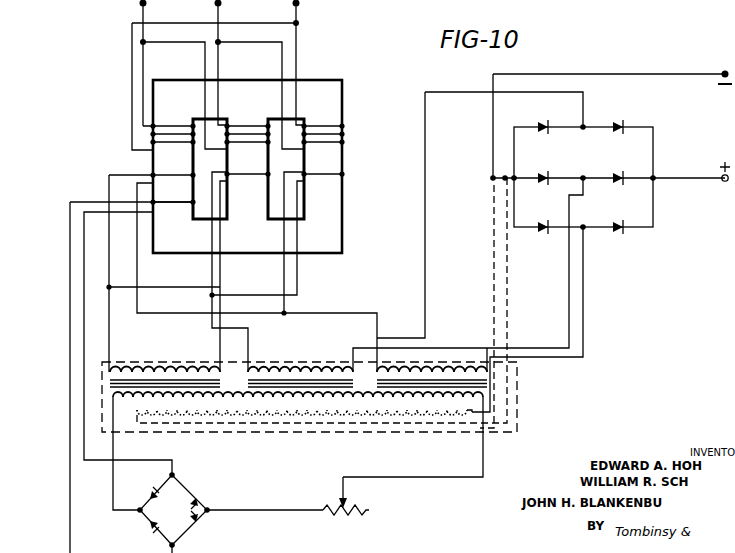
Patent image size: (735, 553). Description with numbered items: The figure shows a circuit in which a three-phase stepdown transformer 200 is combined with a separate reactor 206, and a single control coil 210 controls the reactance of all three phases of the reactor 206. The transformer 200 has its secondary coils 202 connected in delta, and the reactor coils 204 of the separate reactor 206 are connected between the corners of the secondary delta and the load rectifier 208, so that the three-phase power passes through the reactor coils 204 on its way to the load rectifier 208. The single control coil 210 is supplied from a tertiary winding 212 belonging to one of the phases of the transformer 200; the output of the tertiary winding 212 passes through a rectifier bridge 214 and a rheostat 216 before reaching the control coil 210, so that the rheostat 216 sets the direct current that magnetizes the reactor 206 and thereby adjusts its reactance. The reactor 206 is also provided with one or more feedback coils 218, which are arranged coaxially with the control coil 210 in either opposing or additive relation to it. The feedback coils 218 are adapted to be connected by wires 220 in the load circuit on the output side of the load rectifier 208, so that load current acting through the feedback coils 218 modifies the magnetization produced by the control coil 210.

The stepdown transformer 200 is at (343, 90).
The secondary coils 202 is at (163, 170).
The reactor coils 204 is at (158, 368).
The separate reactor 206 is at (519, 412).
The load rectifier 208 is at (632, 151).
The control coil 210 is at (303, 399).
The tertiary winding 212 is at (165, 207).
The rectifier bridge 214 is at (185, 509).
The rheostat 216 is at (349, 514).
The feedback coils 218 is at (415, 417).
The wires 220 is at (506, 266).